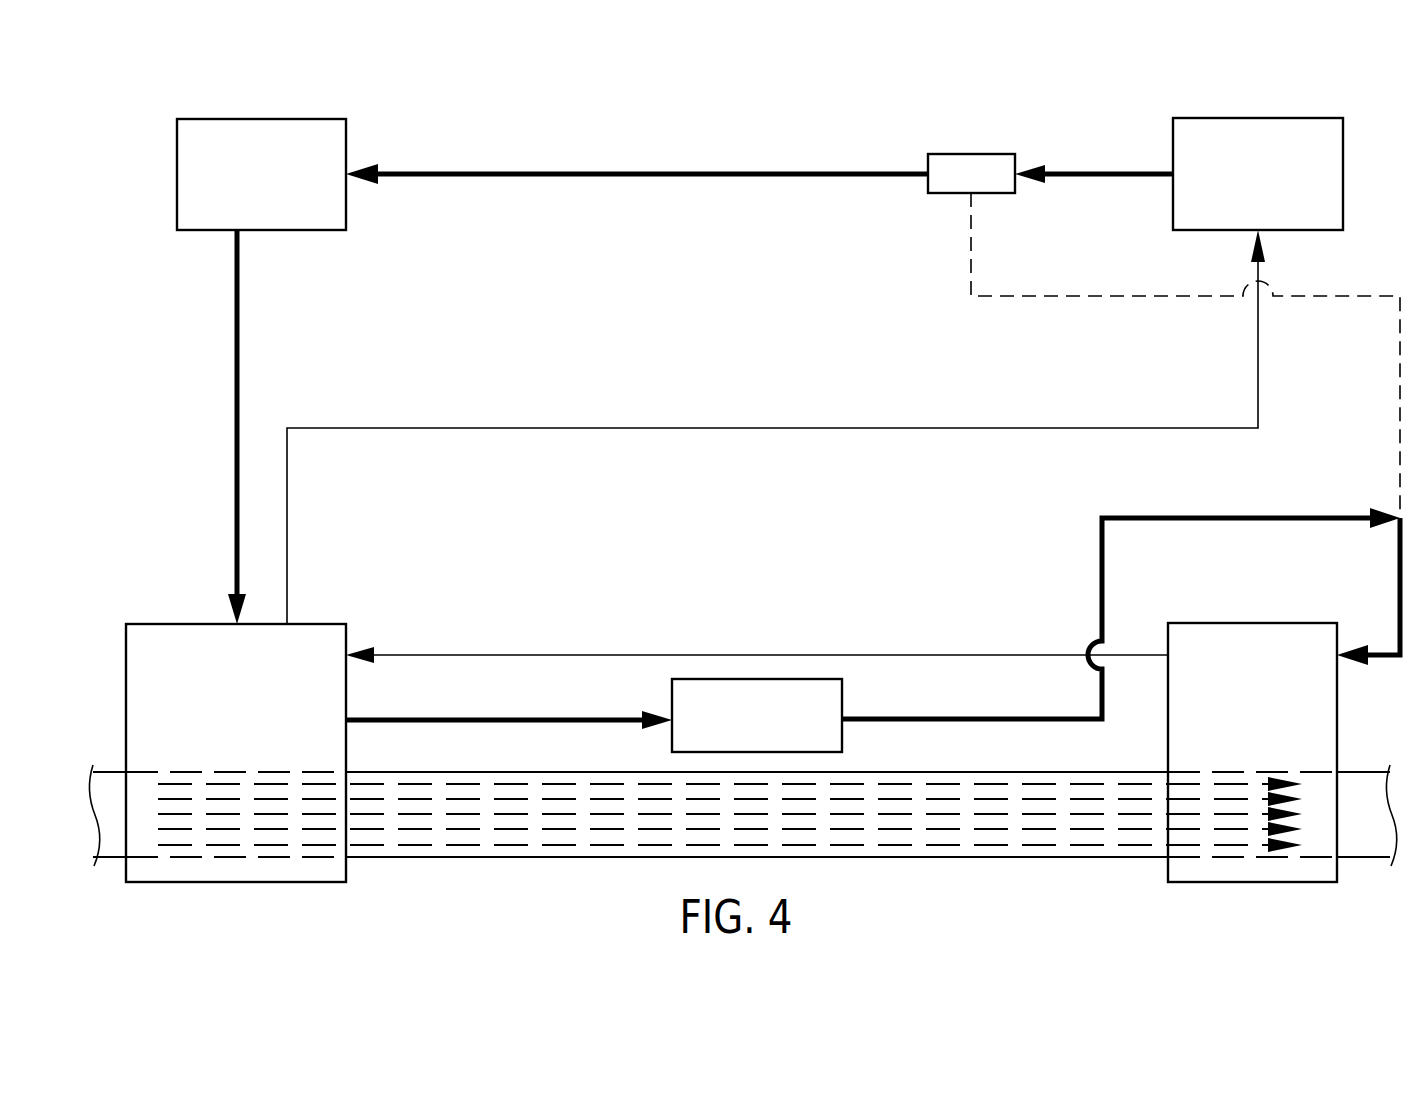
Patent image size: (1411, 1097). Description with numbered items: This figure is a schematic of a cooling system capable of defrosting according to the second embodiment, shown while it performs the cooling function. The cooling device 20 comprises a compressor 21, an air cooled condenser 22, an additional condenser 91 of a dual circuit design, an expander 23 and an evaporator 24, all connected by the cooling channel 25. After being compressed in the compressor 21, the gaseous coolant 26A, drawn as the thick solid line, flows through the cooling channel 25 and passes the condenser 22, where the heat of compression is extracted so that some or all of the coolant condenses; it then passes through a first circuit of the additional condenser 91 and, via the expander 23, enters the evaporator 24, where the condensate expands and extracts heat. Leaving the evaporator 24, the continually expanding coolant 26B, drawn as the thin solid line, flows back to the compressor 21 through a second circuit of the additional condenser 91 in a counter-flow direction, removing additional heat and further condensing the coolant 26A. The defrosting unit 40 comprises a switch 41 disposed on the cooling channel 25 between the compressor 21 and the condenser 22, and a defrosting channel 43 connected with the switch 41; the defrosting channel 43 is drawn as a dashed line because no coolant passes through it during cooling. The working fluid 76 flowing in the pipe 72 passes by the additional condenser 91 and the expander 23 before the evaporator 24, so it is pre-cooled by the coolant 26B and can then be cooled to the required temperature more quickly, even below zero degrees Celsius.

The cooling device 20 is at (1366, 143).
The compressor 21 is at (1313, 118).
The condenser 22 is at (317, 119).
The expander 23 is at (756, 679).
The evaporator 24 is at (1215, 623).
The cooling channel 25 is at (759, 141).
The coolant 26A is at (773, 173).
The coolant 26B is at (1018, 655).
The defrosting unit 40 is at (980, 127).
The switch 41 is at (970, 154).
The defrosting channel 43 is at (1400, 400).
The pipe 72 is at (1138, 857).
The working fluid 76 is at (404, 857).
The additional condenser 91 is at (190, 624).